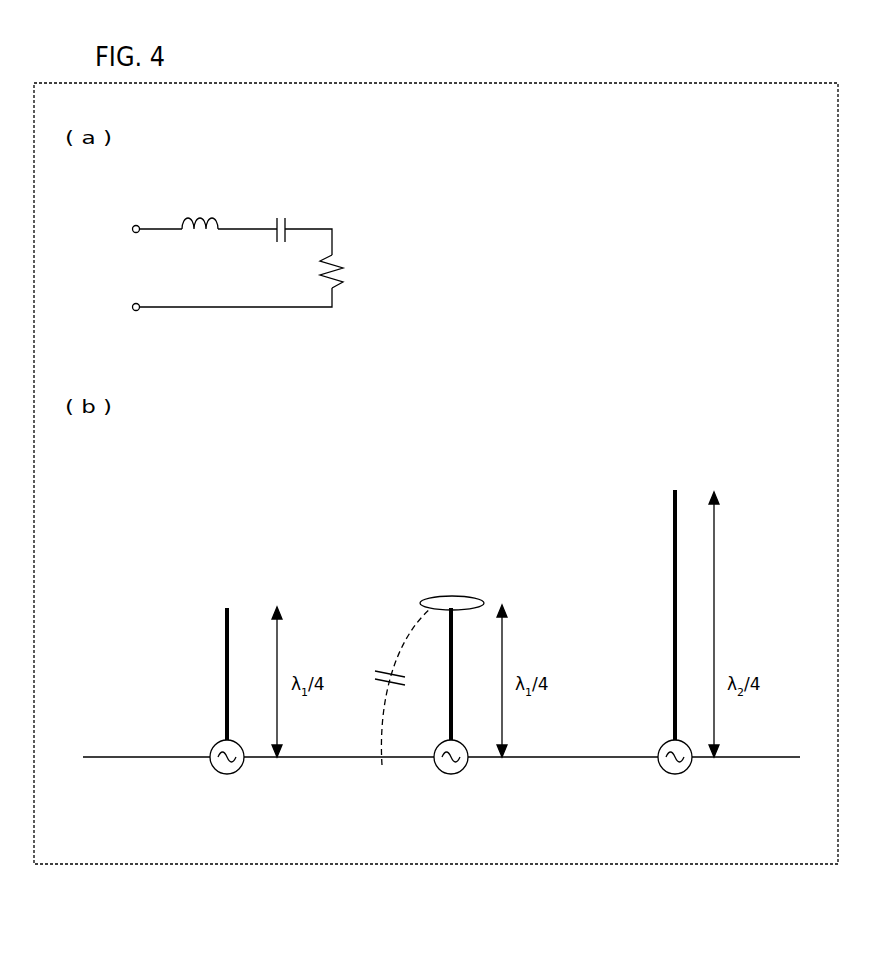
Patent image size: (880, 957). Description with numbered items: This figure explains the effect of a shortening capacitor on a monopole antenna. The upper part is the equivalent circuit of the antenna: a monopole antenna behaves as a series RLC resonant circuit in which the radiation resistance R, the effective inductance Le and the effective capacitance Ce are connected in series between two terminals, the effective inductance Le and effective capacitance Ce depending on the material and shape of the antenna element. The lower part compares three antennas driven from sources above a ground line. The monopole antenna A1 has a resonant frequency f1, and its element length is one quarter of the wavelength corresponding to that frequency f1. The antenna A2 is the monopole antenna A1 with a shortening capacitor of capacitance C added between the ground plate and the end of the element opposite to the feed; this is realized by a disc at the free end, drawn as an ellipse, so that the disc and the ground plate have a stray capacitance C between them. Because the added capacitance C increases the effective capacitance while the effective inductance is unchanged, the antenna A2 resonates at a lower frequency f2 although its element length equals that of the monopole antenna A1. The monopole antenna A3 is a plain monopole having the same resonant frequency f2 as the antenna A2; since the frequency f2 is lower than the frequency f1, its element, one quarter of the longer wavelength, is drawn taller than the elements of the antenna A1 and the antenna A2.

The effective inductance Le is at (200, 210).
The effective capacitance Ce is at (276, 217).
The radiation resistance R is at (341, 271).
The monopole antenna A1 is at (248, 631).
The antenna A2 is at (472, 631).
The monopole antenna A3 is at (695, 520).
The capacitance of shortening capacitor C is at (391, 687).
The resonant frequency of antenna A1 f1 is at (227, 777).
The resonant frequency of antenna A2 f2 is at (563, 777).